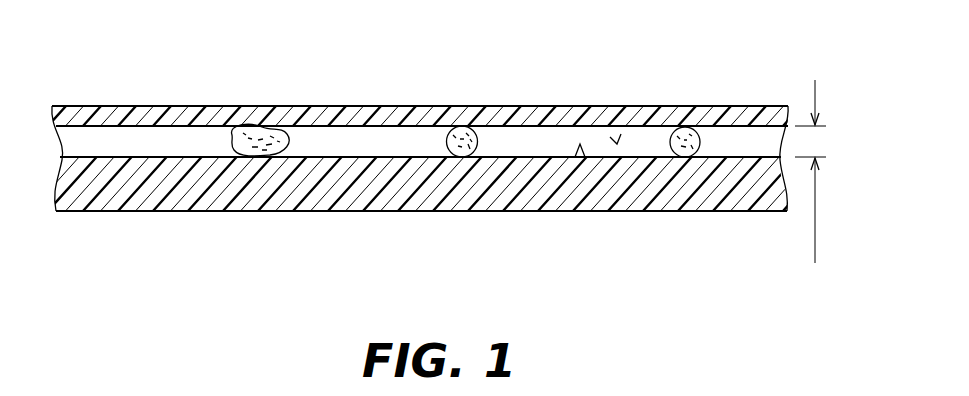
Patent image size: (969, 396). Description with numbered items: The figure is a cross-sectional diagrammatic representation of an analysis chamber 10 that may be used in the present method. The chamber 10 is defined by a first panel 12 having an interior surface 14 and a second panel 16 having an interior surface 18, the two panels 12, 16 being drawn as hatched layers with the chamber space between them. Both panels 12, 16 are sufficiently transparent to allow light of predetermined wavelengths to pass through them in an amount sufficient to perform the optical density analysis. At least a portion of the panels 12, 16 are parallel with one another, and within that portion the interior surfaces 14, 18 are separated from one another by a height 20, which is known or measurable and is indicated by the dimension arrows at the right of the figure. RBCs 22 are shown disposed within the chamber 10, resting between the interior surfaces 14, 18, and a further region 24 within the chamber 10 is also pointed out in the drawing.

The analysis chamber 10 is at (377, 140).
The first panel 12 is at (222, 105).
The interior surface 14 is at (586, 128).
The second panel 16 is at (205, 212).
The interior surface 18 is at (583, 150).
The height 20 is at (815, 80).
The RBCs 22 is at (447, 142).
The void / space 24 is at (617, 144).